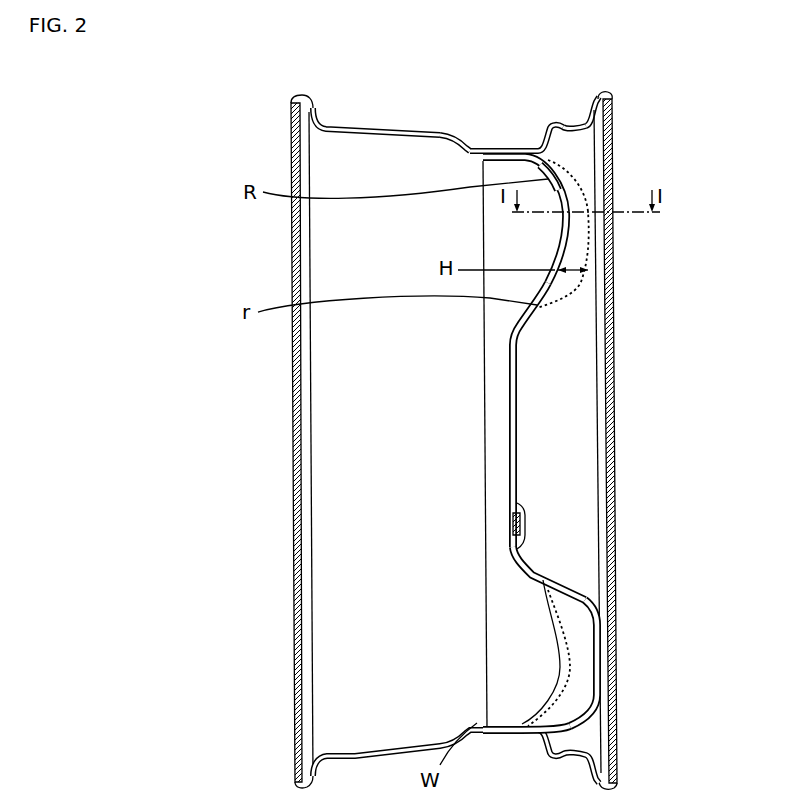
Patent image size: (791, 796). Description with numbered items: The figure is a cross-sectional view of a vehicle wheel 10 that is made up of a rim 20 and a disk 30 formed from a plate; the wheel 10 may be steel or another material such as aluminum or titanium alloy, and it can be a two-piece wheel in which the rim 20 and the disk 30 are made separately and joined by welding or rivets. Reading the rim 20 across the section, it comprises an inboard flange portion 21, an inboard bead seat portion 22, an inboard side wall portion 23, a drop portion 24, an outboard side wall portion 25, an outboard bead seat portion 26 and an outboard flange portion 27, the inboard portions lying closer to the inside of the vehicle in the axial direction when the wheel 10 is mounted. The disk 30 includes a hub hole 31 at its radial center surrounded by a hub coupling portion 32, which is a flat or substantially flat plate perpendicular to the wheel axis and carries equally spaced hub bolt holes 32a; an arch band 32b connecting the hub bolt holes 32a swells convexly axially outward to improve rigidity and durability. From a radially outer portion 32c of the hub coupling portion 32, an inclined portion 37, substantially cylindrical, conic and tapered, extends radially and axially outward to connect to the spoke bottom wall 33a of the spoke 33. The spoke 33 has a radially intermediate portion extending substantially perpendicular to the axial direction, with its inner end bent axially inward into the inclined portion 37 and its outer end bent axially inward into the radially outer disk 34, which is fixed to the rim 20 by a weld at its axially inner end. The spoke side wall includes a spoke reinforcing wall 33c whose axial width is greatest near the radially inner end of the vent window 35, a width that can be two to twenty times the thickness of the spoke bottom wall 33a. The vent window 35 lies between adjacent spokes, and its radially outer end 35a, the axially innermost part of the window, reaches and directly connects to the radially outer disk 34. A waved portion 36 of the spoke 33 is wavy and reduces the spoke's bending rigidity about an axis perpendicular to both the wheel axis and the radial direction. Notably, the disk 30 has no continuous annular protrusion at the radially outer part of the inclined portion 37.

The vehicle wheel 10 is at (453, 424).
The rim 20 is at (385, 125).
The inboard flange portion 21 is at (291, 99).
The inboard bead seat portion 22 is at (336, 125).
The inboard side wall portion 23 is at (467, 138).
The drop portion 24 is at (501, 146).
The outboard side wall portion 25 is at (543, 140).
The outboard bead seat portion 26 is at (568, 119).
The outboard flange portion 27 is at (604, 92).
The disk 30 is at (530, 492).
The hub hole 31 is at (518, 414).
The hub coupling portion 32 is at (518, 380).
The hub bolt hole 32a is at (525, 525).
The arch band 32b is at (520, 354).
The radially outer portion of the hub coupling portion 32c is at (522, 333).
The spoke 33 is at (546, 165).
The spoke bottom wall 33a is at (545, 242).
The spoke reinforcing wall 33c is at (548, 179).
The radially outer disk 34 is at (483, 167).
The vent window 35 is at (598, 623).
The radially outer end of the vent window 35a is at (560, 729).
The waved portion 36 is at (565, 234).
The inclined portion 37 is at (525, 558).